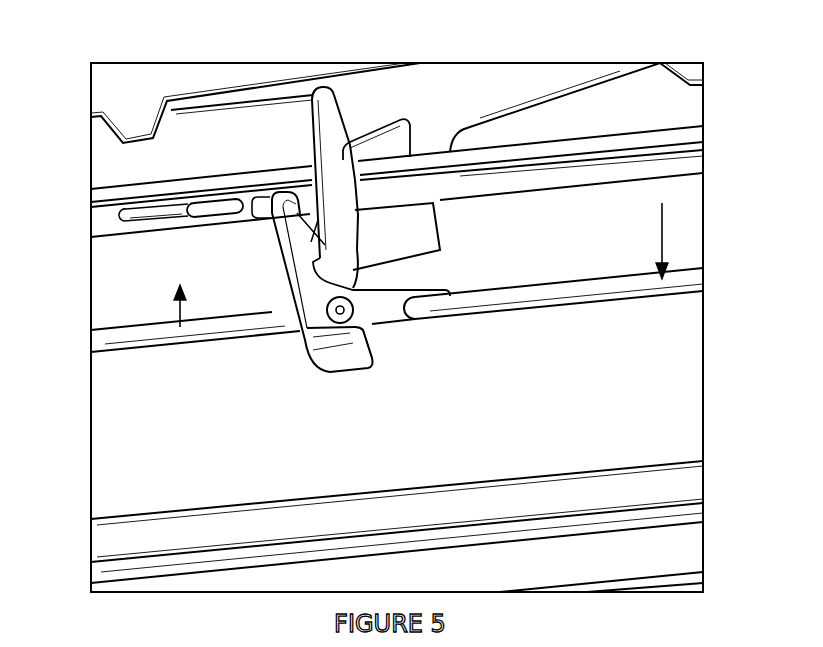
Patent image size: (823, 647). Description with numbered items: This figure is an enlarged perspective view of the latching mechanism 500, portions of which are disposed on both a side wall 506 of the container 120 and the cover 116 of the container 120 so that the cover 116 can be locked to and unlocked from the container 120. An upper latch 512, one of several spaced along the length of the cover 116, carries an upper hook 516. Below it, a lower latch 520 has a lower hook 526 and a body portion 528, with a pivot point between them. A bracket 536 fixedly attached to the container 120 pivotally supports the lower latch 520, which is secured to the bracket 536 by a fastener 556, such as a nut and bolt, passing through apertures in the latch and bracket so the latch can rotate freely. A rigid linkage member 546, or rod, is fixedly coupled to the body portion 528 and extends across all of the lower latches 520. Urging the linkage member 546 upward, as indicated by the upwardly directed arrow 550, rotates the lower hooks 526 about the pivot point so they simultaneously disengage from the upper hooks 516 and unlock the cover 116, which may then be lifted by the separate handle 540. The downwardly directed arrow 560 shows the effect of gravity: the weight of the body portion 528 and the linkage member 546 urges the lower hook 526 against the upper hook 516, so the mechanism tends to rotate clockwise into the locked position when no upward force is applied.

The latching mechanism 500 is at (70, 161).
The handle 540 is at (212, 205).
The lower hook 526 is at (320, 250).
The upper latch 512 is at (328, 150).
The cover 116 is at (673, 115).
The bracket 536 is at (412, 238).
The downwardly directed arrow 560 is at (665, 250).
The upper hook 516 is at (300, 255).
The upwardly directed arrow 550 is at (172, 312).
The lower latch 520 is at (293, 289).
The body portion 528 is at (385, 328).
The fastener 556 is at (300, 328).
The linkage member 546 is at (627, 283).
The side wall 506 is at (245, 455).
The container 120 is at (677, 455).